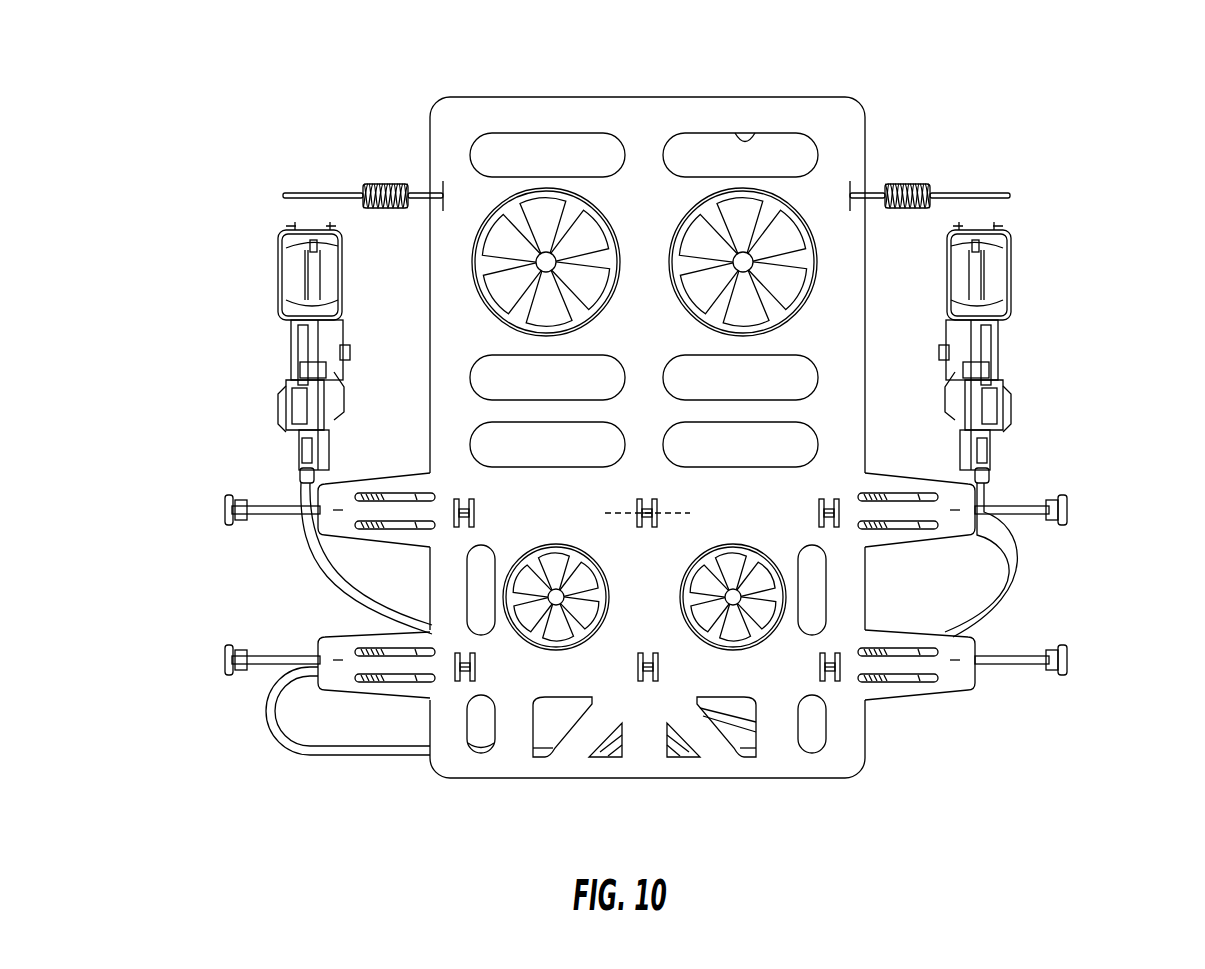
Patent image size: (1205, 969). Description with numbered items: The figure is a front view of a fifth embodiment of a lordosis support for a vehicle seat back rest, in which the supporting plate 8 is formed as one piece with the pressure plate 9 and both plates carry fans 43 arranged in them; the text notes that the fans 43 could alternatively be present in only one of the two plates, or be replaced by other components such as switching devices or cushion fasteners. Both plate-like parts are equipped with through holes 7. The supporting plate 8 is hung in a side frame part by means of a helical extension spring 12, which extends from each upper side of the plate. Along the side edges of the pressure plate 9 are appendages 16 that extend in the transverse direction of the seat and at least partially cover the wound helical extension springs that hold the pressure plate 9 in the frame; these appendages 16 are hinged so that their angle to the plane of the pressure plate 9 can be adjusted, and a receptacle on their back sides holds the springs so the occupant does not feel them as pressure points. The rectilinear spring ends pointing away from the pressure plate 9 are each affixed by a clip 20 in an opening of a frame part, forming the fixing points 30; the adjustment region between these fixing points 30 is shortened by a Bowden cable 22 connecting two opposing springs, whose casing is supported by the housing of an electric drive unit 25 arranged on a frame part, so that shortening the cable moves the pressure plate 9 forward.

The through holes 7 is at (745, 148).
The supporting plate 8 is at (652, 110).
The pressure plate 9 is at (778, 760).
The helical extension spring 12 is at (397, 184).
The appendages 16 is at (405, 690).
The clip 20 is at (1072, 500).
The fixing points 30 is at (646, 585).
The Bowden cable 22 is at (418, 757).
The electric drive unit 25 is at (296, 288).
The fans 43 is at (538, 215).